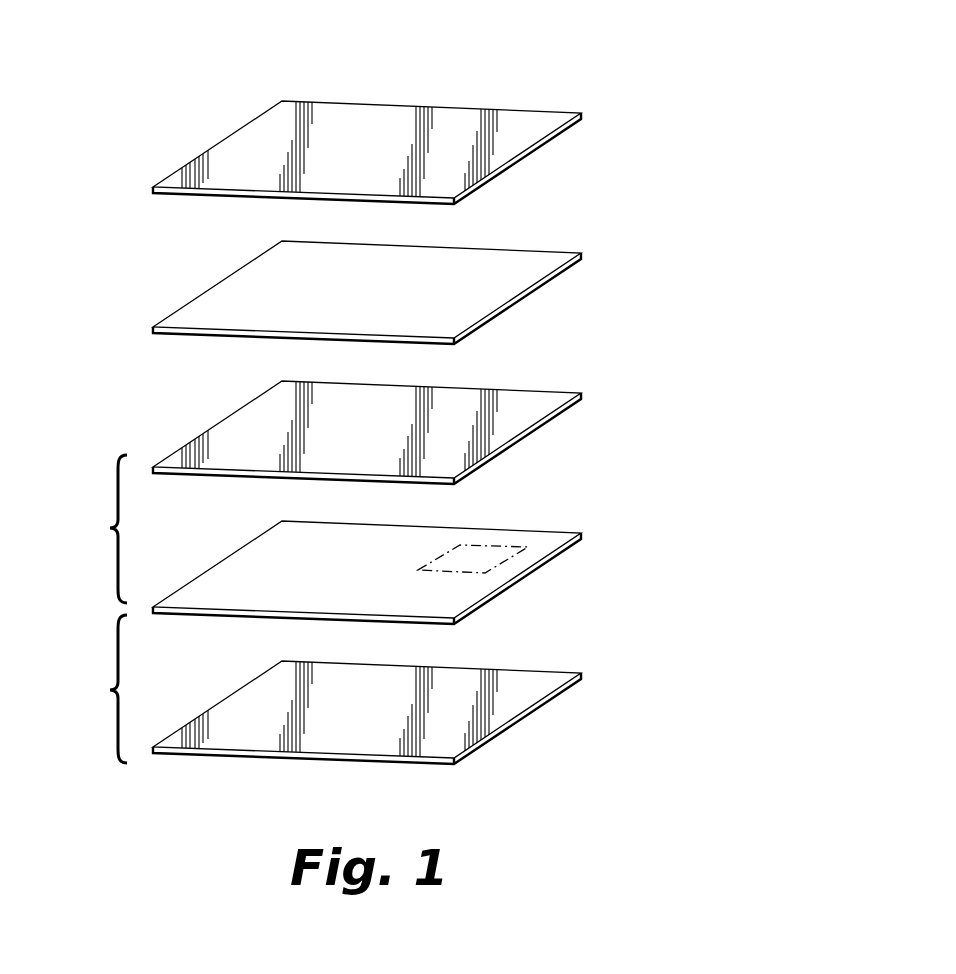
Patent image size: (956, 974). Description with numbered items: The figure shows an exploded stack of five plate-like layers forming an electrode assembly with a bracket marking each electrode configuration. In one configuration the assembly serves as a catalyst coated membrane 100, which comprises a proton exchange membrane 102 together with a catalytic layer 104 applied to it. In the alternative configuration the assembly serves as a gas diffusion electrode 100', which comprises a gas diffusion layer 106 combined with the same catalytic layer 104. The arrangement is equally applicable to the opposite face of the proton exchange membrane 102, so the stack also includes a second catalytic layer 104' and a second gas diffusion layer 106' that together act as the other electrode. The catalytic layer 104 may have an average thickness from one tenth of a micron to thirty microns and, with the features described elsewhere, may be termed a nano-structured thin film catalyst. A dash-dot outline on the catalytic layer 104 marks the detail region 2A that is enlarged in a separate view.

The catalyst coated membrane 100 is at (96, 529).
The gas diffusion electrode 100' is at (93, 689).
The proton exchange membrane 102 is at (525, 388).
The catalytic layer 104 is at (422, 534).
The catalytic layer 104' is at (386, 245).
The gas diffusion layer 106 is at (383, 665).
The gas diffusion layer 106' is at (386, 105).
The detail region shown in FIG. 2A is at (497, 545).